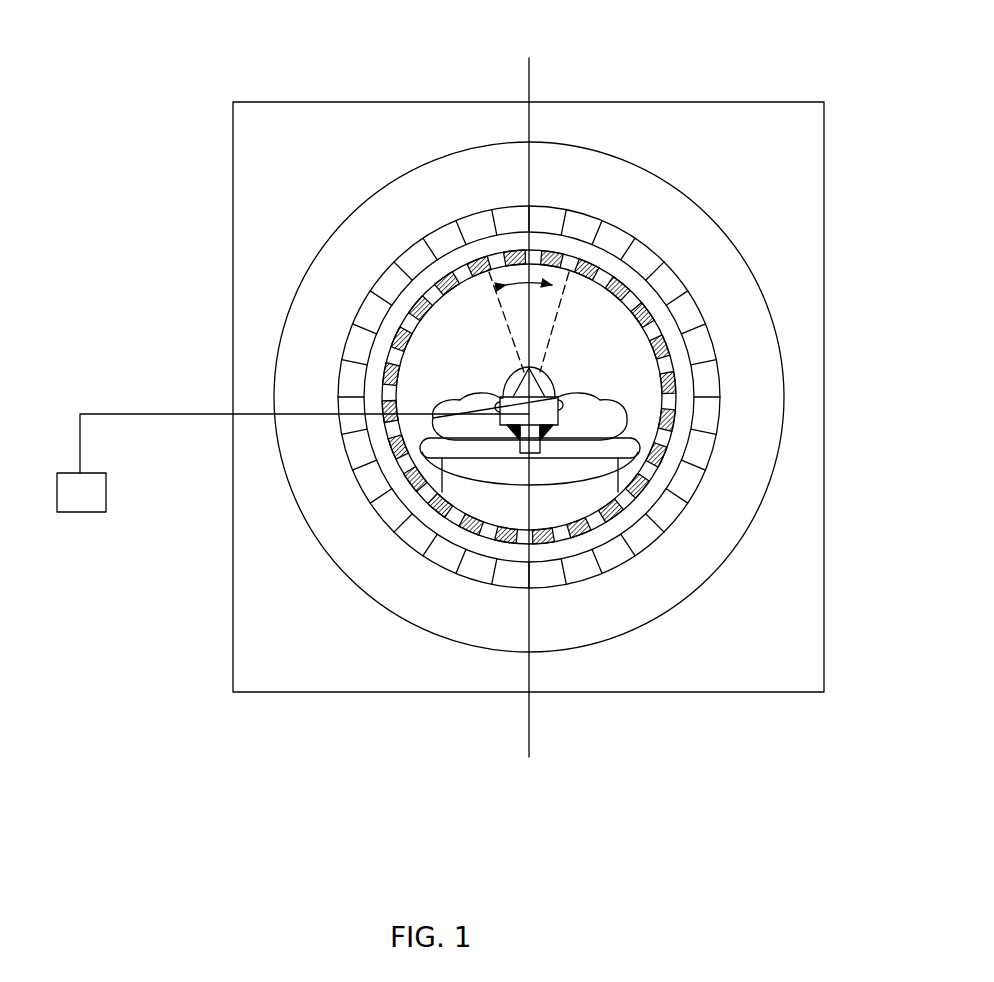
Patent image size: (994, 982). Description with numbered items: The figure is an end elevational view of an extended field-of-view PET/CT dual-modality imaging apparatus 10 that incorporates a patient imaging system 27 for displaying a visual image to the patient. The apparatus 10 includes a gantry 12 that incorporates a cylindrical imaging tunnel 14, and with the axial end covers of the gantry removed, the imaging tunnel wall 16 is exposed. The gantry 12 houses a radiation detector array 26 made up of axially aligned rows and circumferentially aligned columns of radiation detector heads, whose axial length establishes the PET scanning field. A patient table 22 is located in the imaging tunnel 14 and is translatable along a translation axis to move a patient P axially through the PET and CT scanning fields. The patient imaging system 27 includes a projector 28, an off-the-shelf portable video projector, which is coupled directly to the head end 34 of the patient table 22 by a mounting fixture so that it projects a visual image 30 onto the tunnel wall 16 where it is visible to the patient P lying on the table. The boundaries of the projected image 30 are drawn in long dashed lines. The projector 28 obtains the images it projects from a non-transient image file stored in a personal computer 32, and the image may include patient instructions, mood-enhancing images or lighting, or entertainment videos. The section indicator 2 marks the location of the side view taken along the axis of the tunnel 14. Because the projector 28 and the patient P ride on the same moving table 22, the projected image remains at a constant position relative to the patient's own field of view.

The imaging apparatus 10 is at (160, 542).
The gantry 12 is at (838, 516).
The imaging tunnel 14 is at (586, 336).
The imaging tunnel wall 16 is at (698, 330).
The patient table 22 is at (582, 494).
The radiation detector array 26 is at (556, 191).
The patient imaging system 27 is at (122, 386).
The projector 28 is at (545, 412).
The visual image 30 is at (506, 284).
The personal computer 32 is at (62, 503).
The head end 34 is at (488, 463).
The section line 2- 2 is at (529, 58).
The patient P is at (472, 396).